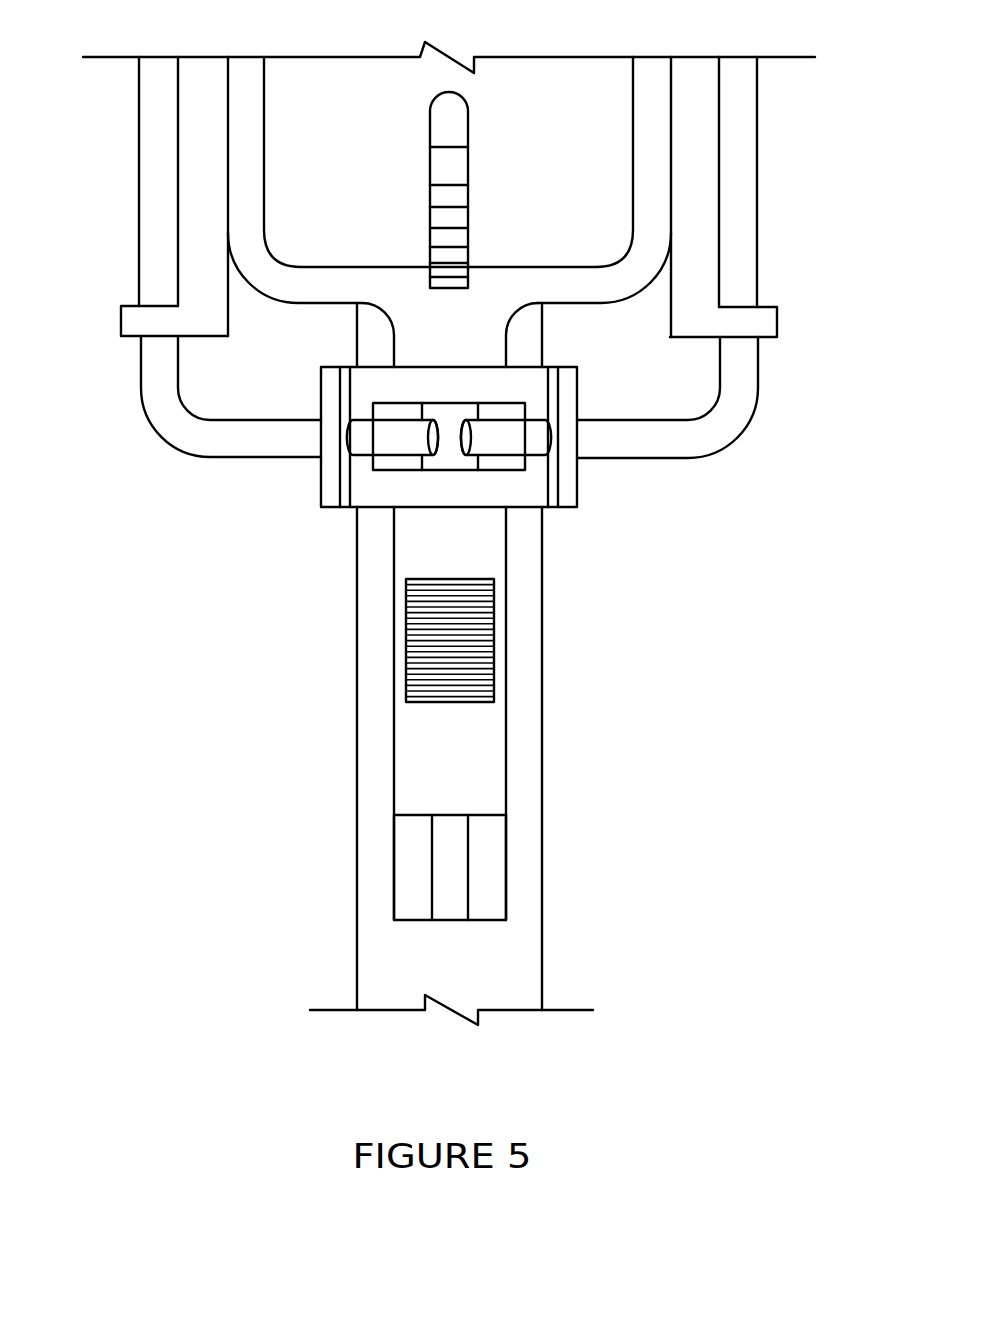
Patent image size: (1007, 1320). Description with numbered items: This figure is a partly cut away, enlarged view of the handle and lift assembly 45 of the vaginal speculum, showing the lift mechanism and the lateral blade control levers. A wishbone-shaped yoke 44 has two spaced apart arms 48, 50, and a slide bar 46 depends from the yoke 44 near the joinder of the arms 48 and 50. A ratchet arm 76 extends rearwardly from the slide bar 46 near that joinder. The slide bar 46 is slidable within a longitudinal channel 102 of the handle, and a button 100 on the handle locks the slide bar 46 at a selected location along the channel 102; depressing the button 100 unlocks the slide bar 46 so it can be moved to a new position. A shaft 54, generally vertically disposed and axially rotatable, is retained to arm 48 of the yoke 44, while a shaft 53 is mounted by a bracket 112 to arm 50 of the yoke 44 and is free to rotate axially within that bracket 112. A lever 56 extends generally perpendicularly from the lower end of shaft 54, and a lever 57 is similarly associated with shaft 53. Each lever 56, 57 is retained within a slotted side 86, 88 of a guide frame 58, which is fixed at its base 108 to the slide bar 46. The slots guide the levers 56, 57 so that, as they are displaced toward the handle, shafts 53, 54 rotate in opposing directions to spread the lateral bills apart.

The yoke 44 is at (263, 272).
The lift assembly 45 is at (653, 217).
The slide bar 46 is at (473, 537).
The arm of yoke 48 is at (650, 110).
The arm of yoke 50 is at (240, 160).
The shaft 53 is at (153, 358).
The shaft 54 is at (747, 238).
The lever 56 is at (493, 439).
The lever 57 is at (402, 441).
The guide frame 58 is at (568, 467).
The ratchet arm 76 is at (448, 125).
The side of guide frame 86 is at (577, 490).
The side of guide frame 88 is at (328, 478).
The button 100 is at (493, 700).
The longitudinal channel 102 is at (452, 862).
The base of guide frame 108 is at (518, 510).
The bracket 112 is at (428, 492).